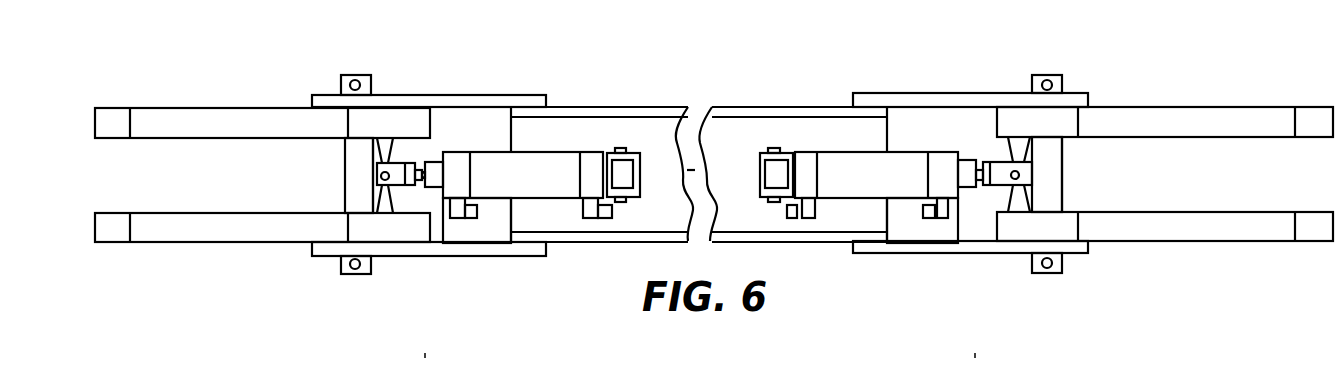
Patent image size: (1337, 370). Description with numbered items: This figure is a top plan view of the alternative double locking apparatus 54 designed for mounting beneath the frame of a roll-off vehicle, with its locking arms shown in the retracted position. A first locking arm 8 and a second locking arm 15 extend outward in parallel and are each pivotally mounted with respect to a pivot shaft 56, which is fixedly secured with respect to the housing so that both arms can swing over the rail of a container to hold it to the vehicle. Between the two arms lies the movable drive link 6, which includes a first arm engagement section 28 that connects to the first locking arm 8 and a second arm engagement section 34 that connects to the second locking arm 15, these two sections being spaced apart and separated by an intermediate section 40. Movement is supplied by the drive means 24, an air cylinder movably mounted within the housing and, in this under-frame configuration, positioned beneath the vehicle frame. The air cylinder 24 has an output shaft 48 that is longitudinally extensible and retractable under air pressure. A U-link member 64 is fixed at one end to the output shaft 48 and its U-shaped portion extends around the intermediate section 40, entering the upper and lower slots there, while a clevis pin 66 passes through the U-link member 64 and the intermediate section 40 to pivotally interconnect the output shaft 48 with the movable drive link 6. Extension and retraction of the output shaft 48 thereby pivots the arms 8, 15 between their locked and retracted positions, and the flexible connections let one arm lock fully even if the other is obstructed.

The movable drive link 6 is at (397, 192).
The first locking arm 8 is at (168, 242).
The second locking arm 15 is at (172, 110).
The drive means 24 is at (838, 190).
The first arm engagement section 28 is at (384, 206).
The second arm engagement section 34 is at (383, 149).
The intermediate section 40 is at (395, 158).
The output shaft 48 is at (433, 187).
The apparatus for mounting under the frame 54 is at (403, 95).
The pivot shaft 56 is at (343, 173).
The U-link member 64 is at (413, 161).
The clevis pin 66 is at (470, 178).